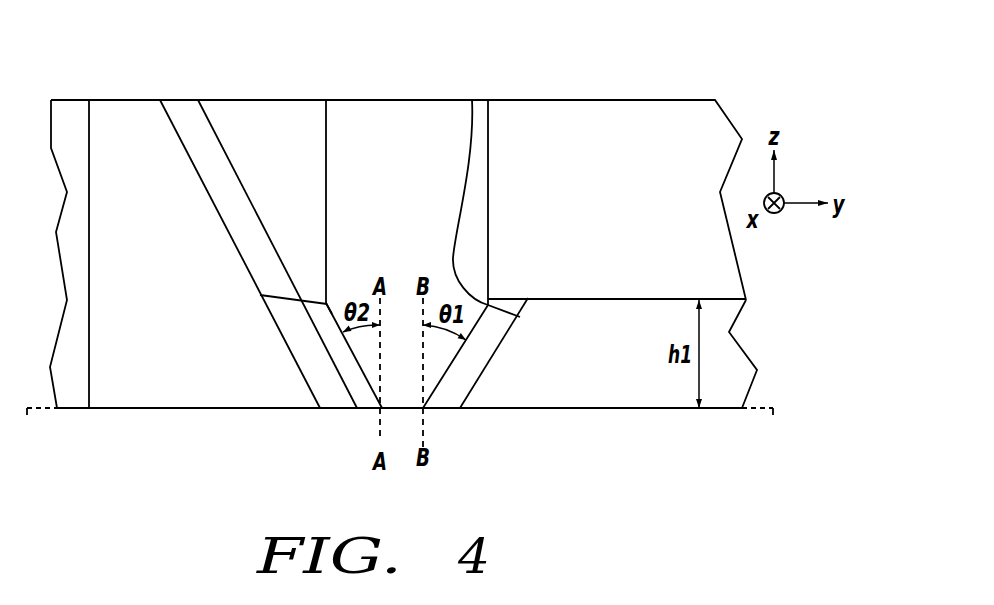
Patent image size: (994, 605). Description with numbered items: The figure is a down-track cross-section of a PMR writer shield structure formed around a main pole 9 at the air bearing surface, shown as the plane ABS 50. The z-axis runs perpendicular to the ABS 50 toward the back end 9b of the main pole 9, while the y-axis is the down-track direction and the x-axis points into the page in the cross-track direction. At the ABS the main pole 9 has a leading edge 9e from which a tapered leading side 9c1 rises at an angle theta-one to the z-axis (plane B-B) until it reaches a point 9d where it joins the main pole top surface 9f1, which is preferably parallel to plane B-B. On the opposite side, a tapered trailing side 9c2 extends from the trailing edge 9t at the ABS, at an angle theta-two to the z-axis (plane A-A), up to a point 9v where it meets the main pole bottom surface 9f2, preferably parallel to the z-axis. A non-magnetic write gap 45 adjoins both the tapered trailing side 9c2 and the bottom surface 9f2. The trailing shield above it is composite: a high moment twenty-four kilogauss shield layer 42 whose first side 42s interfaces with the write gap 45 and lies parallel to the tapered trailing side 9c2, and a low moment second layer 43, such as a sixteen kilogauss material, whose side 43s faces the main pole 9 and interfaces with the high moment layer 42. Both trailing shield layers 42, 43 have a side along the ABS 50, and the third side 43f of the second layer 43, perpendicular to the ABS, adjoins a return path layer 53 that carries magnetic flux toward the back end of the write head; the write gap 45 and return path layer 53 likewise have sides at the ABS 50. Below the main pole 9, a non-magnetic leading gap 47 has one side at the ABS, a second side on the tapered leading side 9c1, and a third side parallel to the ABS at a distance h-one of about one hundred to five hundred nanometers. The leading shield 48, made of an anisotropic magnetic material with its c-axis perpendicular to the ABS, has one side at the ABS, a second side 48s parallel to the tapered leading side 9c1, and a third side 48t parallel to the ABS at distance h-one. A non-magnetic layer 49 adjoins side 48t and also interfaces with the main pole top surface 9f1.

The main pole 9 is at (363, 118).
The back end of the main pole 9b is at (415, 100).
The tapered leading side 9c1 is at (472, 100).
The tapered trailing side 9c2 is at (350, 352).
The point where the tapered leading side connects with the main pole top surface 9d is at (520, 317).
The leading edge 9e is at (423, 408).
The main pole top surface 9f1 is at (488, 132).
The main pole bottom surface 9f2 is at (325, 138).
The trailing edge 9t is at (382, 408).
The point where the tapered trailing side connects with the main pole bottom surface 9v is at (330, 316).
The high moment 24 kG shield layer 42 is at (185, 122).
The first side of the 24 kG shield layer 42s is at (302, 301).
The second trailing shield layer 43 is at (132, 388).
The third side of the second shield layer 43f is at (88, 118).
The side of the second trailing shield layer facing the main pole 43s is at (260, 296).
The write gap 45 is at (365, 395).
The leading gap 47 is at (455, 397).
The leading shield 48 is at (613, 393).
The second side of the leading shield 48s is at (496, 355).
The third side of the leading shield 48t is at (723, 299).
The non-magnetic layer 49 is at (633, 118).
The ABS 50 is at (398, 427).
The return path layer 53 is at (68, 355).